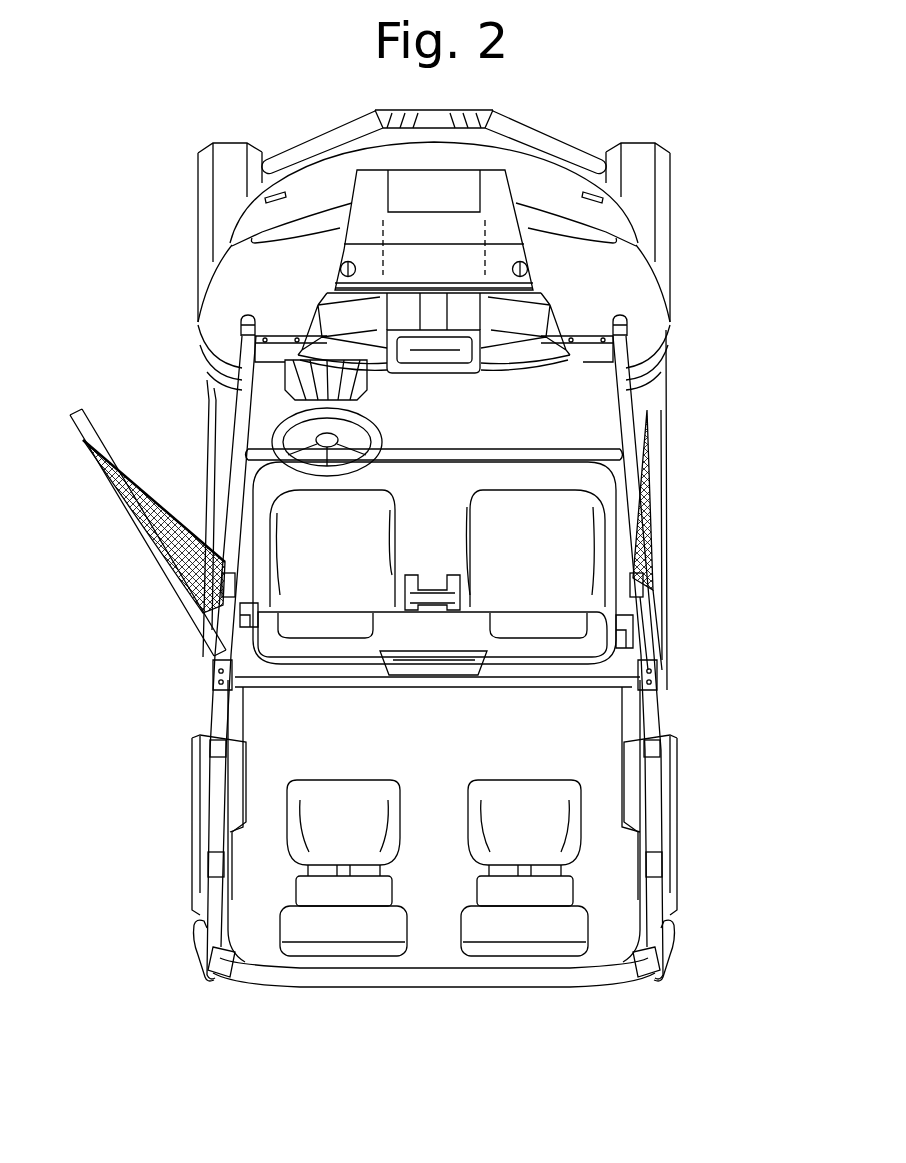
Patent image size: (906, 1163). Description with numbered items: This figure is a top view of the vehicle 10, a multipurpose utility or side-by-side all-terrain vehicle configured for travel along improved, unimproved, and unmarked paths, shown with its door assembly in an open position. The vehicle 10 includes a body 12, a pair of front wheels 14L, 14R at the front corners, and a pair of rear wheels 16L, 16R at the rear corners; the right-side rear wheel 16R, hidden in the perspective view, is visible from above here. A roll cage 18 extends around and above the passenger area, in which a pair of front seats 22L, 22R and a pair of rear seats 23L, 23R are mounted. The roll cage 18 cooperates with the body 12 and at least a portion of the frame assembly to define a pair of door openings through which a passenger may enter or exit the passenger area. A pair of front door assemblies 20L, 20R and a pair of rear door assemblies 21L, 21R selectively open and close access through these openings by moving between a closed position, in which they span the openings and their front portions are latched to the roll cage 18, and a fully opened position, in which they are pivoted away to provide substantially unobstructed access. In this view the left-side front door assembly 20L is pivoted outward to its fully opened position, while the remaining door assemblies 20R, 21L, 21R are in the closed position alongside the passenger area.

The vehicle 10 is at (726, 148).
The body 12 is at (660, 354).
The front wheel 14L is at (198, 205).
The front wheel 14R is at (671, 212).
The rear wheel 16L is at (190, 840).
The rear wheel 16R is at (677, 842).
The roll cage 18 is at (246, 380).
The front door assembly 20L is at (122, 558).
The front door assembly 20R is at (677, 526).
The rear door assembly 21L is at (208, 702).
The rear door assembly 21R is at (666, 690).
The front seat 22L is at (265, 505).
The front seat 22R is at (605, 497).
The rear seat 23L is at (345, 800).
The rear seat 23R is at (526, 800).